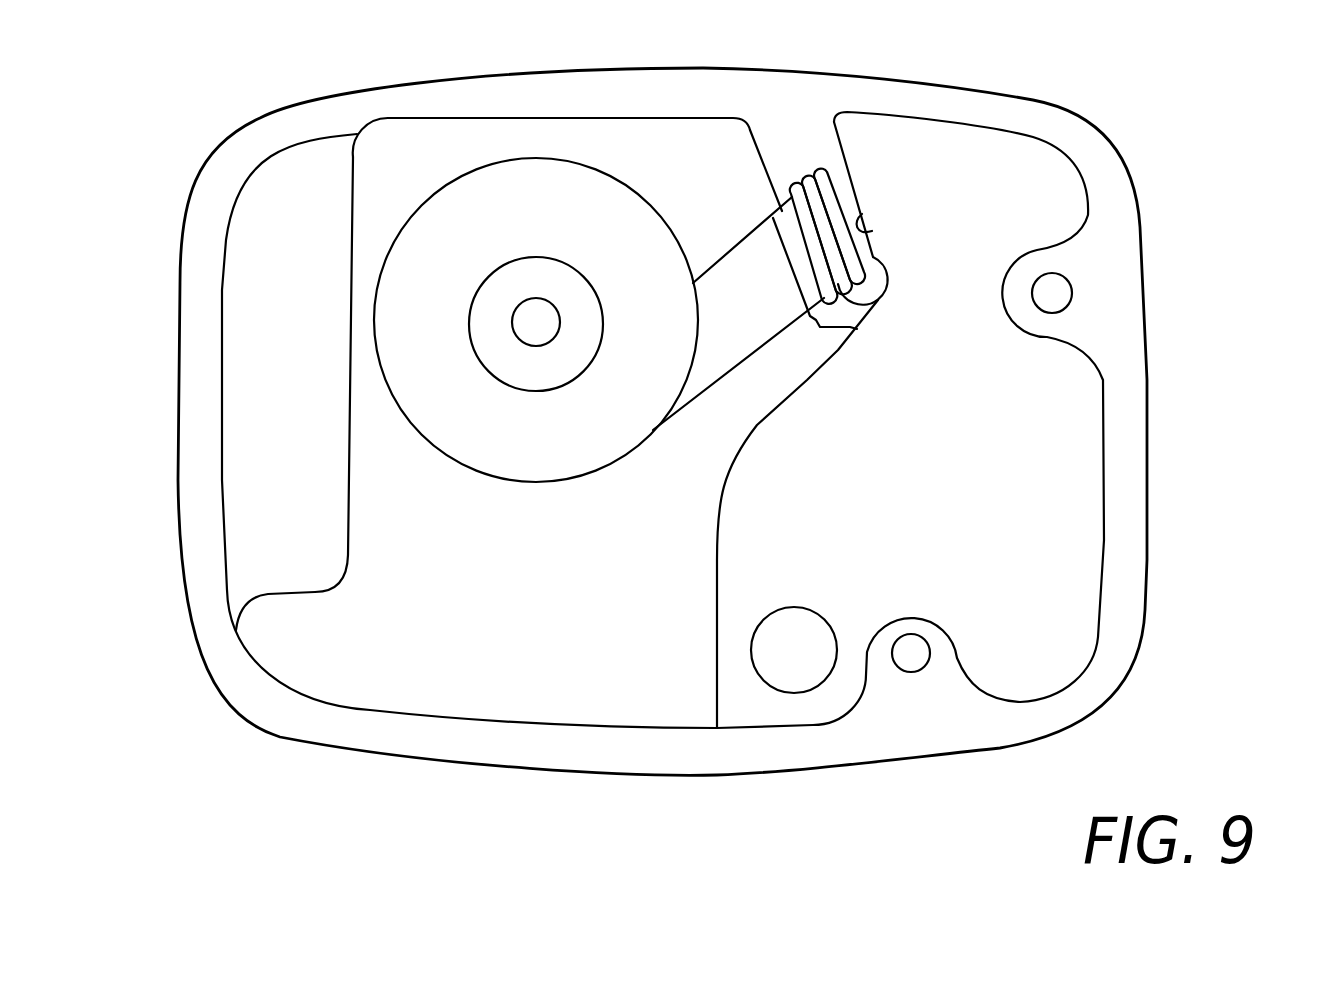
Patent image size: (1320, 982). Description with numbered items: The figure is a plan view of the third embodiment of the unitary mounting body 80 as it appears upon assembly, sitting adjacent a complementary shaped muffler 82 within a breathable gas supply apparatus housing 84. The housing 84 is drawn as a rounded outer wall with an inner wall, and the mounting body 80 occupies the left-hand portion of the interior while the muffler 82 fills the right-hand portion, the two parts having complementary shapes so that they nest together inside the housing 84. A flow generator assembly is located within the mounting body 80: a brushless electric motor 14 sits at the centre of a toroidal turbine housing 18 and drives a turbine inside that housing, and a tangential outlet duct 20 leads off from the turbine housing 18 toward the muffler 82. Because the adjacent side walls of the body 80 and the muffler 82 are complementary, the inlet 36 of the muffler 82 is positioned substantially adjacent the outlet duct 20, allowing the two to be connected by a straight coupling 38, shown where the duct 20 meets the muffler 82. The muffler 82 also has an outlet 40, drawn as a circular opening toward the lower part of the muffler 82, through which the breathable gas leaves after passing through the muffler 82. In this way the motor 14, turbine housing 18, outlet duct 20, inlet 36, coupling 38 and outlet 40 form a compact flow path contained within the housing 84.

The brushless electric motor 14 is at (547, 367).
The toroidal turbine housing 18 is at (468, 442).
The tangential outlet duct 20 is at (743, 332).
The inlet 36 is at (873, 234).
The straight coupling 38 is at (882, 306).
The outlet 40 is at (807, 633).
The unitary mounting body 80 is at (670, 173).
The muffler 82 is at (1020, 182).
The breathable gas supply apparatus housing 84 is at (1162, 312).